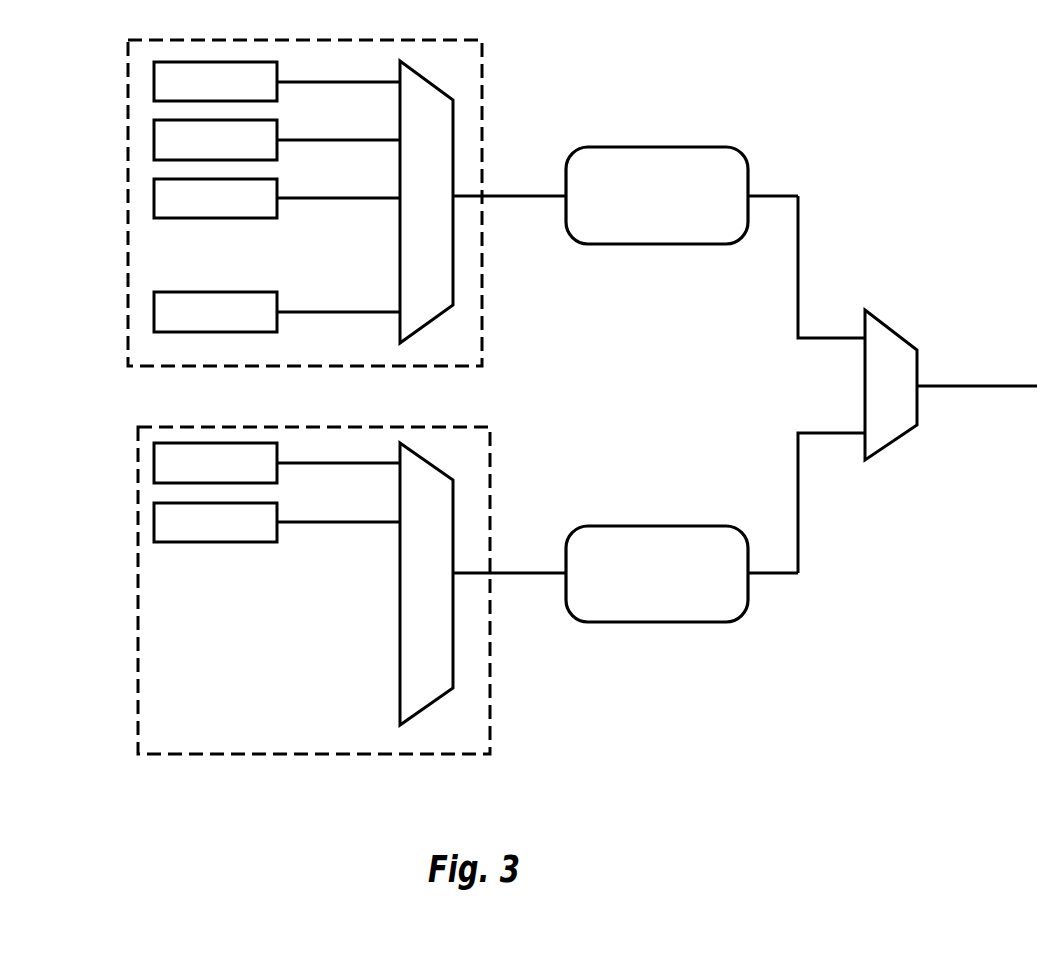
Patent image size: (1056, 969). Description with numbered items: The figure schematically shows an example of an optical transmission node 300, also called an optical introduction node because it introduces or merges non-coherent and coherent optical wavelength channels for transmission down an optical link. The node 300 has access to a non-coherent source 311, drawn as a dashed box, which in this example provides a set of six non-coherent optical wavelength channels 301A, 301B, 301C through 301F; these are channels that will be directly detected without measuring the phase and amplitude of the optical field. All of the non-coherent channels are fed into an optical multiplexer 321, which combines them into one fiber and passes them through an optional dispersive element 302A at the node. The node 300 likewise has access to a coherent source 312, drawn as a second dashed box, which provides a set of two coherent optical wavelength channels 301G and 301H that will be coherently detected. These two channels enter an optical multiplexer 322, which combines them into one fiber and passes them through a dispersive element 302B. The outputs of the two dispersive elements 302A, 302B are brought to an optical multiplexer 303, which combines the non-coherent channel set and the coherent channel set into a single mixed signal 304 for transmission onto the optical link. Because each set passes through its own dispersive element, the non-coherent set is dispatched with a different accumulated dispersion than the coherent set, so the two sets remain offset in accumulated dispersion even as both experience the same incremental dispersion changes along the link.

The optical transmission node 300 is at (669, 434).
The non-coherent optical wavelength channel 301A is at (234, 97).
The non-coherent optical wavelength channel 301B is at (234, 155).
The non-coherent optical wavelength channel 301C is at (234, 214).
The non-coherent optical wavelength channel 301F is at (234, 327).
The coherent optical wavelength channel 301G is at (234, 478).
The coherent optical wavelength channel 301H is at (234, 537).
The dispersive element 302A is at (686, 227).
The dispersive element 302B is at (686, 606).
The optical multiplexer 303 is at (920, 362).
The mixed signal 304 is at (991, 389).
The non-coherent source 311 is at (128, 252).
The coherent source 312 is at (138, 640).
The optical multiplexer 321 is at (455, 118).
The optical multiplexer 322 is at (455, 500).